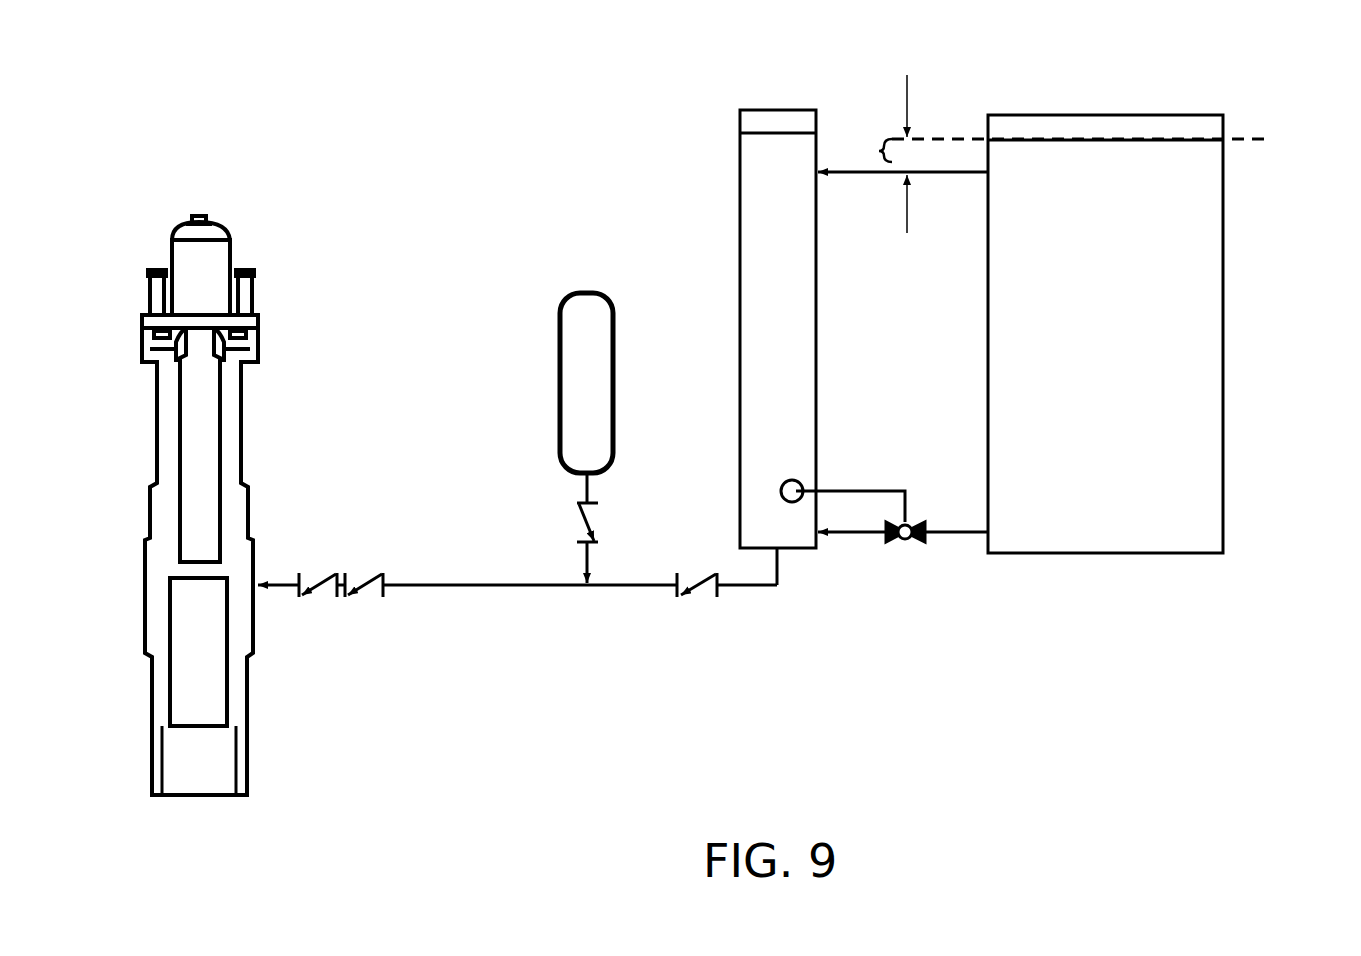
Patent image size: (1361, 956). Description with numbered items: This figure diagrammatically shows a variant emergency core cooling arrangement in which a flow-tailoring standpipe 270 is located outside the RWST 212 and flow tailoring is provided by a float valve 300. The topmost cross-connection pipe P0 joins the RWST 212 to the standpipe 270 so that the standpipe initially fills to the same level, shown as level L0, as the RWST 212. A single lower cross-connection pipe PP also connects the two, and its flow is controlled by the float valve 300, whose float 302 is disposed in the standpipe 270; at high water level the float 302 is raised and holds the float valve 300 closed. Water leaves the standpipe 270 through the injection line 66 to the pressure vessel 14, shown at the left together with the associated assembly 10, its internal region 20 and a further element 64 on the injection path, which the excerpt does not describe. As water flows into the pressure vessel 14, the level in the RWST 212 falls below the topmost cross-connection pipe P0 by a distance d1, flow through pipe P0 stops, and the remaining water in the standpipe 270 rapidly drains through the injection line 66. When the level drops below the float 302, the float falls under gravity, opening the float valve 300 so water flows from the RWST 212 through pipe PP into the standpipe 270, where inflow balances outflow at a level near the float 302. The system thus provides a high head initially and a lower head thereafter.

The actuator 10 is at (282, 408).
The pressure vessel 14 is at (241, 470).
The hydraulic chamber 20 is at (191, 678).
The accumulator 64 is at (575, 340).
The injection line 66 is at (626, 585).
The external standpipe 270 is at (778, 329).
The RWST 212 is at (1020, 334).
The float 302 is at (806, 491).
The float valve 300 is at (905, 560).
The topmost cross-connection pipe P0 is at (849, 175).
The cross-connection pipe PP is at (968, 530).
The initial water level L0 is at (1109, 149).
The distance d1 is at (864, 140).